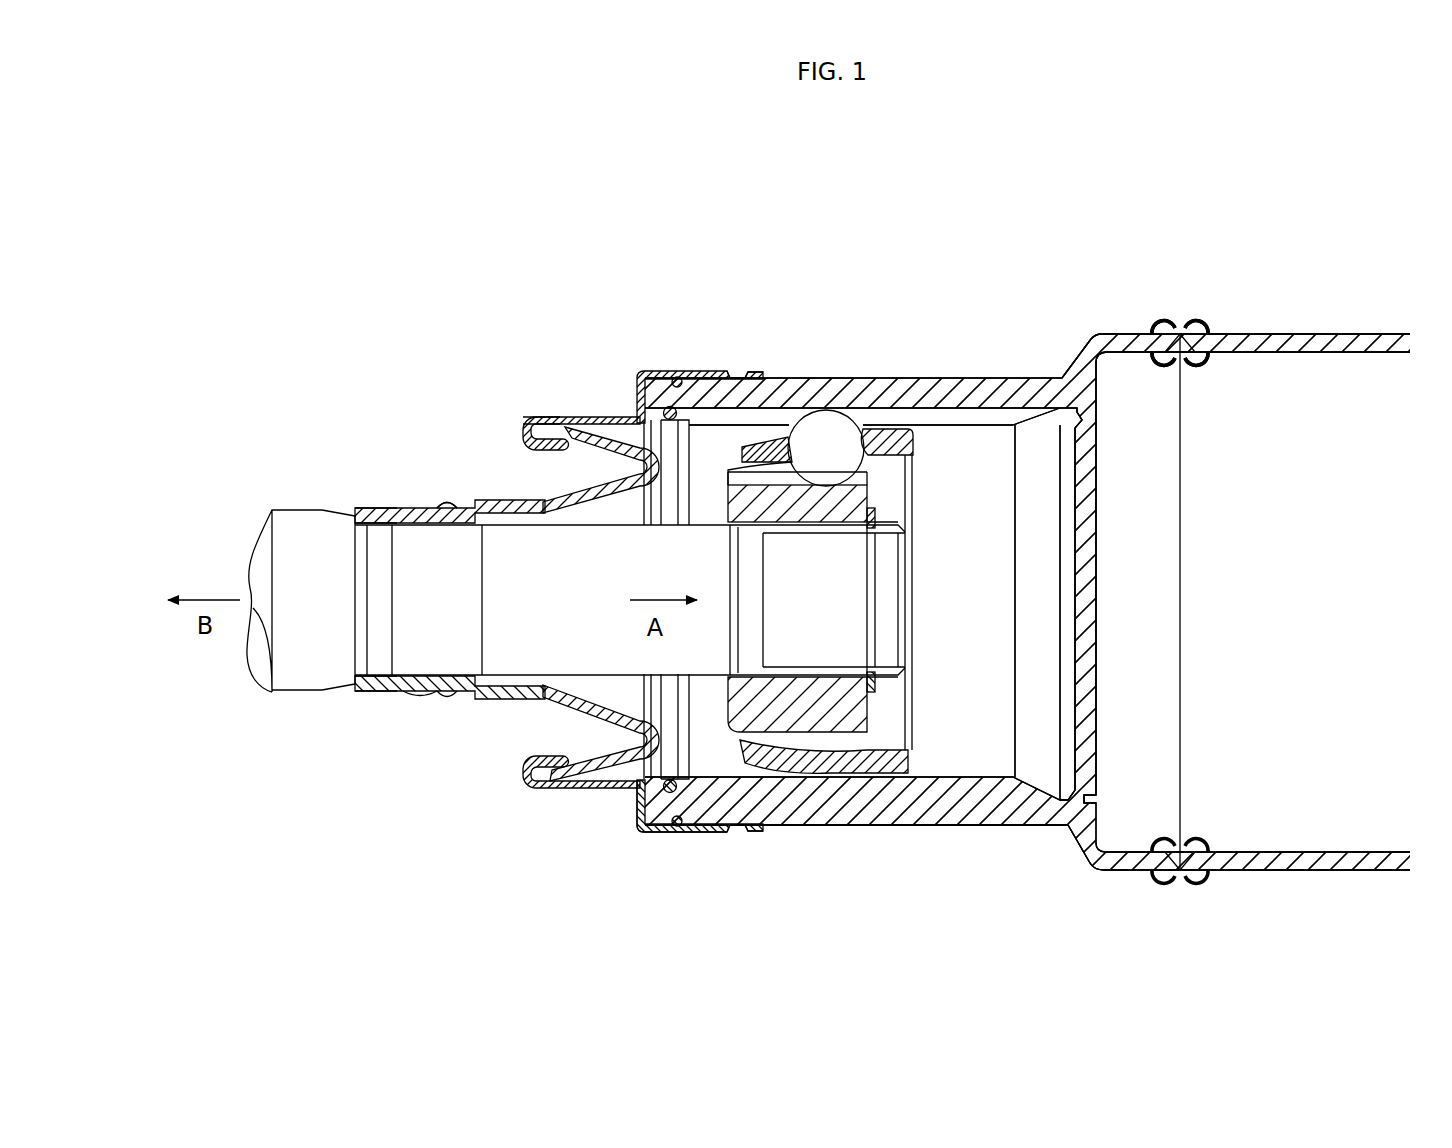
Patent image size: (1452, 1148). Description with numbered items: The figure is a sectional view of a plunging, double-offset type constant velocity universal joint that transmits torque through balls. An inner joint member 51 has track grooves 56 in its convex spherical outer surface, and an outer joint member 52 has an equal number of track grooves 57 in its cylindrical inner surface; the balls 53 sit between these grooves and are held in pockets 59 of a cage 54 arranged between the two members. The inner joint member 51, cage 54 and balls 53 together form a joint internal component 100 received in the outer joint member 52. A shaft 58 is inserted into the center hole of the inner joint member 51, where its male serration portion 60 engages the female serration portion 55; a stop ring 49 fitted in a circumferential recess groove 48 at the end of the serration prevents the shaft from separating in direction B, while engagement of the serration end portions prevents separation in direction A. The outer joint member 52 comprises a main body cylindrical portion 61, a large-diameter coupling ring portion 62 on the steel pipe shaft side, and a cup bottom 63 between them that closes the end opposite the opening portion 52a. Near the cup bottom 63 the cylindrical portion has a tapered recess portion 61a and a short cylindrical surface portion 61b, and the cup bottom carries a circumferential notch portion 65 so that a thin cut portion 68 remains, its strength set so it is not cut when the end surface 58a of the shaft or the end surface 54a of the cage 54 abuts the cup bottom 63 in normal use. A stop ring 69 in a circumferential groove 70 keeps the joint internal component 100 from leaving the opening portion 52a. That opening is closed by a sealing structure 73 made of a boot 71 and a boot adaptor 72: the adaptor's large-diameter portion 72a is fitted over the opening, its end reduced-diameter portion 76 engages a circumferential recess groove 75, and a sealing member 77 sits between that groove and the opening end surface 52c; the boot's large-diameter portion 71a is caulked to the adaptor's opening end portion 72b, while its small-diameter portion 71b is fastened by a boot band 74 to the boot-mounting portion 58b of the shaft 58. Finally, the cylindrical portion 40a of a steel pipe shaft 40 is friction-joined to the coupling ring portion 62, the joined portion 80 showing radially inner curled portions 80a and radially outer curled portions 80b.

The steel pipe shaft 40 is at (1286, 318).
The cylindrical portion 40a is at (1268, 872).
The circumferential recess groove 48 is at (855, 632).
The stop ring 49 is at (880, 670).
The inner joint member 51 is at (868, 704).
The outer joint member 52 is at (851, 373).
The opening portion 52a is at (633, 772).
The opening end surface 52c is at (633, 832).
The balls 53 is at (850, 456).
The cage 54 is at (898, 441).
The end surface 54a is at (900, 757).
The female serration portion 55 is at (847, 522).
The track grooves 56 is at (752, 482).
The track grooves 57 is at (767, 413).
The shaft 58 is at (520, 652).
The end surface 58a is at (903, 595).
The boot-mounting portion 58b is at (415, 615).
The pockets 59 is at (806, 447).
The male serration portion 60 is at (824, 684).
The main body cylindrical portion 61 is at (907, 828).
The tapered recess portion 61a is at (1085, 790).
The short cylindrical surface portion 61b is at (1084, 420).
The large-diameter coupling ring portion 62 is at (1118, 872).
The cup bottom 63 is at (1100, 665).
The circumferential notch portion 65 is at (1098, 800).
The cut portion 68 is at (1080, 388).
The stop ring 69 is at (663, 410).
The circumferential groove 70 is at (662, 495).
The boot 71 is at (505, 502).
The large-diameter portion 71a is at (526, 415).
The small-diameter portion 71b is at (395, 508).
The boot adaptor 72 is at (707, 370).
The large-diameter portion 72a is at (695, 834).
The opening end portion 72b is at (532, 450).
The sealing structure 73 is at (432, 704).
The boot band 74 is at (437, 505).
The circumferential recess groove 75 is at (744, 378).
The end reduced-diameter portion 76 is at (748, 834).
The sealing member 77 is at (677, 374).
The joined portion 80 is at (1178, 300).
The radially inner curled portions 80a is at (1160, 364).
The radially outer curled portions 80b is at (1160, 320).
The joint internal component 100 is at (915, 420).